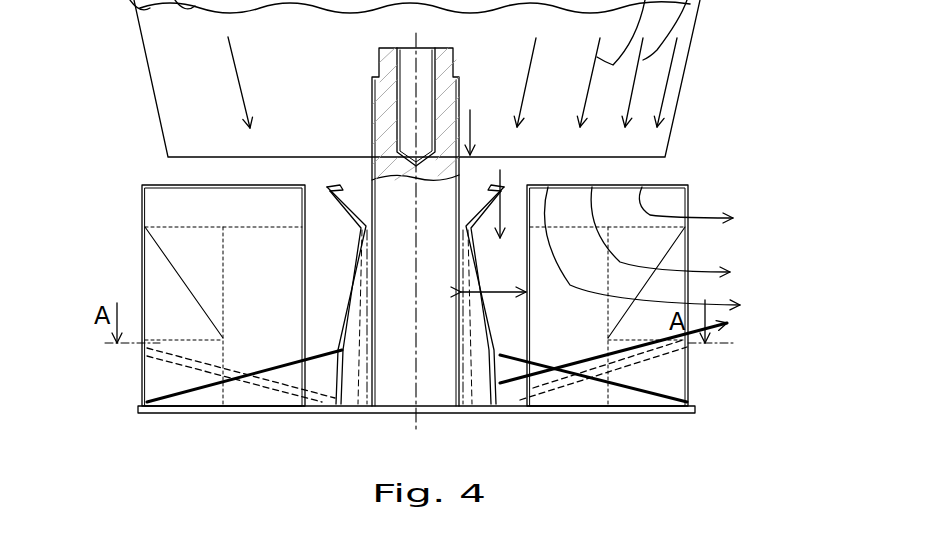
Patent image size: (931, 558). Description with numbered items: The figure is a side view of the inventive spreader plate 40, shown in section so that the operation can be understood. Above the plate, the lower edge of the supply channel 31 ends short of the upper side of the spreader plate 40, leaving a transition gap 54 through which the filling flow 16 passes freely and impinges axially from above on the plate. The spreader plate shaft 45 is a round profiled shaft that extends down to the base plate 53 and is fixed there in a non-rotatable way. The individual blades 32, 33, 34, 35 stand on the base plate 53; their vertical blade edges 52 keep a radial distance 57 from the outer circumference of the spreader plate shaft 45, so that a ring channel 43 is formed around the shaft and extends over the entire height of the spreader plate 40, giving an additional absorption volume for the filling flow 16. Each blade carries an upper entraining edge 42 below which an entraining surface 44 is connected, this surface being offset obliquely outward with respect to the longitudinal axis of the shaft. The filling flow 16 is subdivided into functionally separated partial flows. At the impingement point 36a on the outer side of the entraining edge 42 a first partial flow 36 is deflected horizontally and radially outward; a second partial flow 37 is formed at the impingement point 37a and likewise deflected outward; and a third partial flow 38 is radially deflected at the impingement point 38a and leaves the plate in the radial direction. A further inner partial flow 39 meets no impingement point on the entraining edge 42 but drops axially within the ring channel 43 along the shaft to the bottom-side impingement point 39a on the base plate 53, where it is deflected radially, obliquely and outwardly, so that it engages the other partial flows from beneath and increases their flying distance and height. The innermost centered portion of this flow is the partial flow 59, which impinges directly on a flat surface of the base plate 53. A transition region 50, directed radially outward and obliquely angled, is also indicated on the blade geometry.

The filling flow 16 is at (240, 85).
The supply channel 31 is at (640, 157).
The blade 32 is at (677, 207).
The blade 33 is at (487, 185).
The blade 34 is at (160, 205).
The blade 35 is at (343, 186).
The first partial flow 36 is at (692, 216).
The impingement point 36a is at (648, 187).
The second partial flow 37 is at (703, 270).
The impingement point 37a is at (592, 187).
The third partial flow 38 is at (720, 303).
The impingement point 38a is at (548, 187).
The inner partial flow 39 is at (713, 330).
The bottom-side impingement point 39a is at (540, 370).
The spreader plate 40 is at (737, 67).
The entraining edge 42 is at (687, 182).
The ring channel 43 is at (520, 297).
The entraining surface 44 is at (330, 197).
The spreader plate shaft 45 is at (442, 97).
The transition region 50 is at (153, 287).
The vertical blade edge 52 is at (343, 347).
The base plate 53 is at (580, 414).
The transition gap 54 is at (222, 168).
The radial distance 57 is at (495, 290).
The partial flow 59 is at (470, 110).